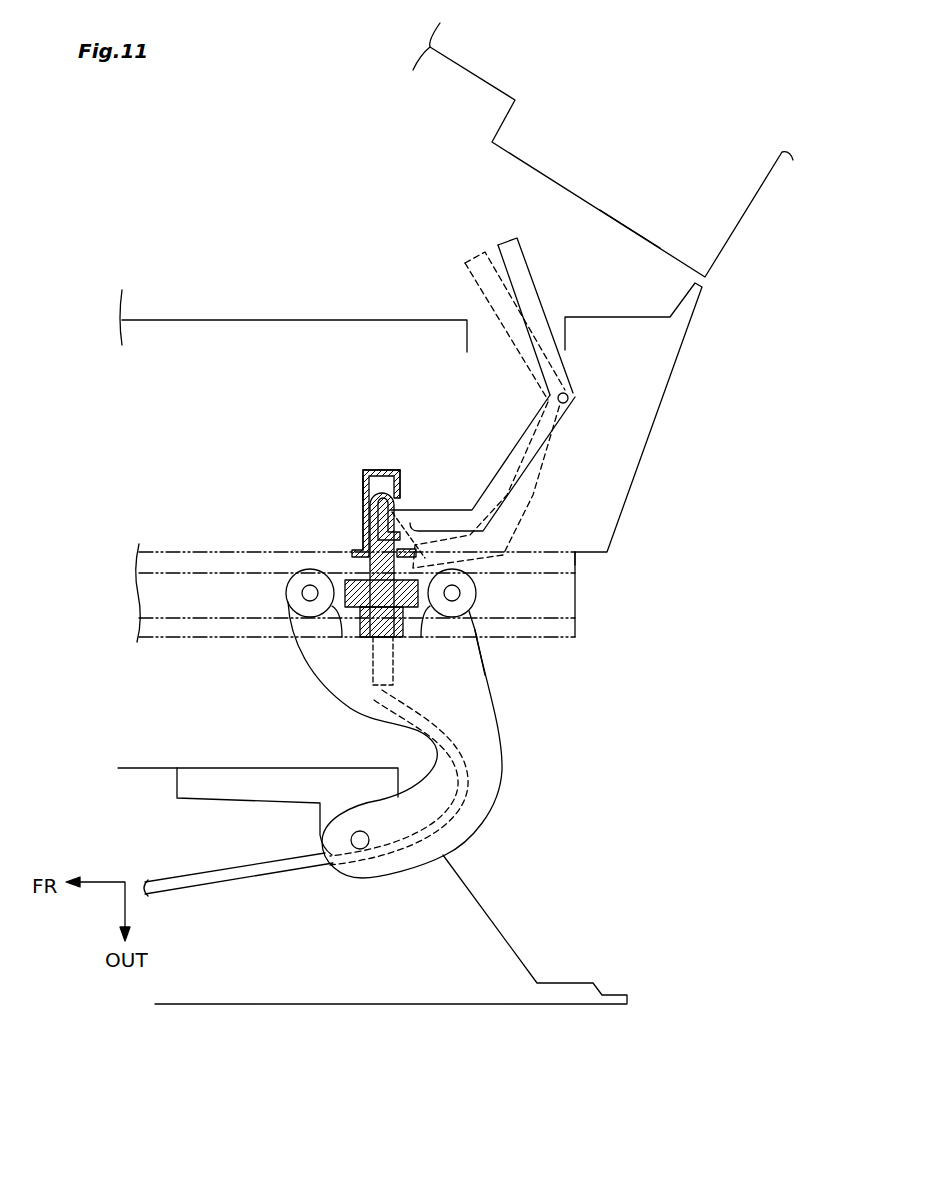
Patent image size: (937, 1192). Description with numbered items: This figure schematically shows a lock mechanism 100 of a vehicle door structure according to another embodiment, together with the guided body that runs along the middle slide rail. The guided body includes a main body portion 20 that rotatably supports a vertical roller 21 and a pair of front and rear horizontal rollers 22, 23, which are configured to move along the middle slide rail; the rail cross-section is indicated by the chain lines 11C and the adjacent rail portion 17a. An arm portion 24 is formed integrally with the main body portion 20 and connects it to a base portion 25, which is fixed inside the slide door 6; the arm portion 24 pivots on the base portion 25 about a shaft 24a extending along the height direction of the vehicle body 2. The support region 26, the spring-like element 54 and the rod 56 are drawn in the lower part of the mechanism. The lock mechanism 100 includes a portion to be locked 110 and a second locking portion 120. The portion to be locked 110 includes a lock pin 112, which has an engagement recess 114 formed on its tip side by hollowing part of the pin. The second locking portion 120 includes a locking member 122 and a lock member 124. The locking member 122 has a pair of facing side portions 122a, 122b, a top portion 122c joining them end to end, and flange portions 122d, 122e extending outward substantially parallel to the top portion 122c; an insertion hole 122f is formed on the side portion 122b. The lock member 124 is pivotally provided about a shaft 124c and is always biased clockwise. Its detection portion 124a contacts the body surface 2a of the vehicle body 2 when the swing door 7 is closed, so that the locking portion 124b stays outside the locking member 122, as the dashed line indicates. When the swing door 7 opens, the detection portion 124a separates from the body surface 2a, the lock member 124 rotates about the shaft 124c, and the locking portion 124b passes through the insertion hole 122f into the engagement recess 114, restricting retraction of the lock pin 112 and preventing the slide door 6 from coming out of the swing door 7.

The vehicle body 2 is at (730, 220).
The body surface 2a is at (622, 232).
The slide door 6 is at (258, 988).
The swing door 7 is at (627, 430).
The seat cushion frame 11C is at (268, 553).
The side frame 17a is at (562, 545).
The main body portion 20 is at (468, 655).
The vertical roller 21 is at (344, 582).
The horizontal roller 22 is at (317, 577).
The horizontal roller 23 is at (467, 587).
The arm portion 24 is at (457, 802).
The shaft 24a is at (360, 848).
The base portion 25 is at (222, 786).
The support portion 26 is at (357, 628).
The spring 54 is at (397, 670).
The rod 56 is at (240, 878).
The lock mechanism 100 is at (270, 417).
The portion to be locked 110 is at (373, 650).
The lock pin 112 is at (345, 597).
The engagement recess 114 is at (361, 483).
The second locking portion 120 is at (437, 417).
The locking member 122 is at (458, 494).
The side portion 122a is at (363, 500).
The side portion 122b is at (398, 477).
The top portion 122c is at (383, 467).
The flange portion 122d is at (363, 516).
The flange portion 122e is at (417, 545).
The insertion hole 122f is at (390, 513).
The lock member 124 is at (524, 403).
The detection portion 124a is at (533, 295).
The locking portion 124b is at (453, 507).
The shaft 124c is at (575, 395).